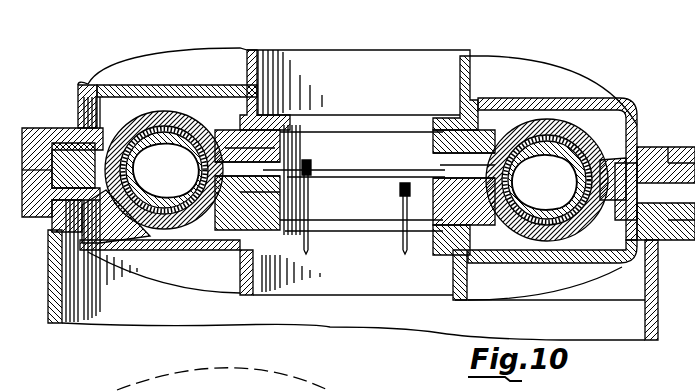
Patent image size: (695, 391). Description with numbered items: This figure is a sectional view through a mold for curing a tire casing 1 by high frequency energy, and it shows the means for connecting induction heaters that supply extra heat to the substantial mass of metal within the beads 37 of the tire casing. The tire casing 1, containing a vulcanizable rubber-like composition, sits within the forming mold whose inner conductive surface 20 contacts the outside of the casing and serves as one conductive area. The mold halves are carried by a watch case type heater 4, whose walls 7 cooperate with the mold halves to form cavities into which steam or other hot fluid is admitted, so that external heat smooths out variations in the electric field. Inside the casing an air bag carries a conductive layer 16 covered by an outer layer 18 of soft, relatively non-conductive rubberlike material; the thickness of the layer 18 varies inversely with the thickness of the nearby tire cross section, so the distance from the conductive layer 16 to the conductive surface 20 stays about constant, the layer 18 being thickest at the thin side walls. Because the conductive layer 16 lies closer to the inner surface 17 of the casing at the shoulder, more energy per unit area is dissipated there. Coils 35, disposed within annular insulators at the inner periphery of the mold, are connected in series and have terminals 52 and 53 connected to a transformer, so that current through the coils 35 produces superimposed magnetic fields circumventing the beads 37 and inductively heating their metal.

The tire casing 1 is at (80, 111).
The watch case type heater 4 is at (283, 50).
The wall of the watch case type heater 7 is at (152, 191).
The conductive layer 16 is at (547, 180).
The inner surface of the tire casing 17 is at (132, 224).
The outer layer of rubberlike material 18 is at (558, 160).
The conductive surface of the forming mold 20 is at (371, 194).
The coils 35 is at (440, 160).
The beads 37 is at (518, 94).
The terminal 52 is at (309, 161).
The terminal 53 is at (402, 193).